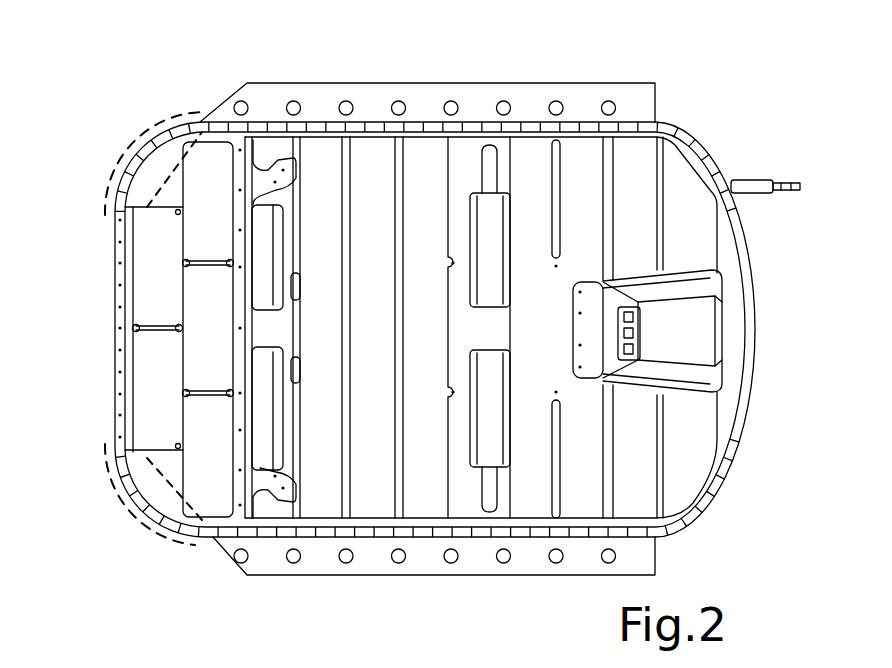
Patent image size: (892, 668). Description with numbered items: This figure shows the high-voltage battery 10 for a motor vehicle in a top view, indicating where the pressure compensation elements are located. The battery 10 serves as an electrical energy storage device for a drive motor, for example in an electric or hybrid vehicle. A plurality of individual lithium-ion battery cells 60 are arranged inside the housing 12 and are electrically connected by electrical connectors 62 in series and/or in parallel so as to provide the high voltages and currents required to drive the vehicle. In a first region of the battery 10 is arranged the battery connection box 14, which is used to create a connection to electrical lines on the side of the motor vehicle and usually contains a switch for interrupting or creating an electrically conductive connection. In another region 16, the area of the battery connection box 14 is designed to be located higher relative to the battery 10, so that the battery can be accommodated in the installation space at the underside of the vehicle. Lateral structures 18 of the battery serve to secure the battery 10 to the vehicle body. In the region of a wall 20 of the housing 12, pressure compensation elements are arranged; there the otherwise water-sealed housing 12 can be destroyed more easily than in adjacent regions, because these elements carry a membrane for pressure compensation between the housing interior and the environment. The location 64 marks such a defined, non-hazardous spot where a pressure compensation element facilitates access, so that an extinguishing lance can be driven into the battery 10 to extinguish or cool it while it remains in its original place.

The battery 10 is at (115, 97).
The housing 12 is at (413, 200).
The battery connection box 14 is at (690, 330).
The region 16 is at (208, 157).
The lateral structures 18 is at (320, 93).
The wall 20 is at (145, 160).
The lithium-ion battery cells 60 is at (510, 203).
The electrical connectors 62 is at (495, 148).
The location 64 is at (398, 527).